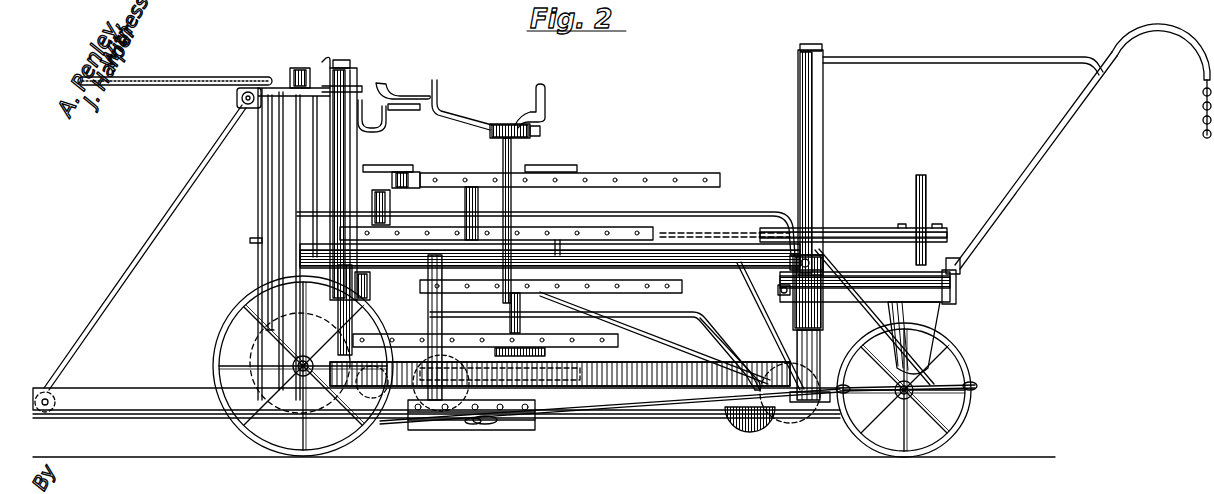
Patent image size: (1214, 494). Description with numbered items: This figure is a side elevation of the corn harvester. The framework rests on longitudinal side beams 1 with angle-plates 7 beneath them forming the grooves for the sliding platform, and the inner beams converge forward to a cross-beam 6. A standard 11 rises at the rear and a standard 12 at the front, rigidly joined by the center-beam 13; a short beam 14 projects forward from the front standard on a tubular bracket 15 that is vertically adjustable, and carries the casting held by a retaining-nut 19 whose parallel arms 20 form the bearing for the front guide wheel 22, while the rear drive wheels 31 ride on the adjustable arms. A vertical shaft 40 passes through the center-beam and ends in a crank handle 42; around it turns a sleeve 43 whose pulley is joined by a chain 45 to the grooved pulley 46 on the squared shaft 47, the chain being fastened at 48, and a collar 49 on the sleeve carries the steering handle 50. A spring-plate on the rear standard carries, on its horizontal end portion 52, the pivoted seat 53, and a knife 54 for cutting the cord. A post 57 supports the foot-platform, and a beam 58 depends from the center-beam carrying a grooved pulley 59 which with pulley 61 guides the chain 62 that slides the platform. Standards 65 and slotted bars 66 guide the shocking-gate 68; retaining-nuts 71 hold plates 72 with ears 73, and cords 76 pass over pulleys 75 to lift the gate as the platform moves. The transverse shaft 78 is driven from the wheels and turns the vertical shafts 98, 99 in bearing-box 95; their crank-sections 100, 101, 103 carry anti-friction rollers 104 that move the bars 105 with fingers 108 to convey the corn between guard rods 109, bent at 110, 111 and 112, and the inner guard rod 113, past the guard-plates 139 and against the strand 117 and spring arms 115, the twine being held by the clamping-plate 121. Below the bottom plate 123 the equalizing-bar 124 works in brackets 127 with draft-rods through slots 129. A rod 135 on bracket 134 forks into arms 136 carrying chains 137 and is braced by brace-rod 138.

The longitudinal side beam 1 is at (140, 395).
The angle-plate 7 is at (145, 420).
The cross-beam 6 is at (778, 290).
The standard 11 is at (357, 150).
The standard 12 is at (825, 127).
The center-beam 13 is at (684, 250).
The short longitudinal beam 14 is at (875, 272).
The tubular bracket 15 is at (822, 290).
The retaining-nut 19 is at (962, 262).
The parallel arms 20 is at (920, 349).
The front guide and supporting-wheel 22 is at (972, 405).
The rear wheel 31 is at (212, 352).
The vertical shaft 40 is at (520, 305).
The crank handle 42 is at (547, 102).
The vertical sleeve 43 is at (503, 148).
The chain 45 is at (740, 232).
The grooved pulley 46 is at (900, 228).
The squared shaft 47 is at (916, 182).
The chain securing point 48 is at (937, 228).
The collar 49 is at (508, 124).
The handle 50 is at (448, 118).
The horizontal end portion 52 is at (412, 110).
The seat 53 is at (396, 96).
The knife 54 is at (342, 60).
The short standard or post 57 is at (465, 200).
The beam 58 is at (500, 300).
The grooved pulley 59 is at (395, 410).
The grooved pulley 61 is at (745, 422).
The chain 62 is at (718, 345).
The standard 65 is at (296, 193).
The bar 66 is at (266, 270).
The shocking-gate 68 is at (155, 88).
The retaining-nut 71 is at (292, 70).
The plate 72 is at (336, 90).
The ear 73 is at (236, 98).
The grooved pulley 75 is at (60, 392).
The cord 76 is at (135, 256).
The shaft 78 is at (385, 375).
The bearing-box 95 is at (370, 286).
The vertical shaft 98 is at (390, 200).
The vertical shaft 99 is at (556, 250).
The crank-section 100 is at (545, 354).
The crank-section 101 is at (580, 298).
The crank-section 103 is at (560, 163).
The anti-friction roller 104 is at (415, 172).
The bar 105 is at (690, 173).
The teeth or fingers 108 is at (615, 225).
The guide or guard rod 109 is at (690, 228).
The bend 110 is at (870, 315).
The bend 111 is at (950, 384).
The bend 112 is at (735, 360).
The inner guard rod 113 is at (760, 270).
The spring arm 115 is at (250, 241).
The strand 117 is at (279, 168).
The spring clamping-plate 121 is at (327, 62).
The bottom plate 123 is at (700, 419).
The equalizing-bar 124 is at (478, 425).
The bracket 127 is at (432, 430).
The vertical slot 129 is at (800, 405).
The bracket 134 is at (958, 292).
The rod 135 is at (1060, 140).
The arms 136 is at (1175, 37).
The chain 137 is at (1202, 108).
The brace-rod 138 is at (962, 57).
The guard-plate 139 is at (582, 385).